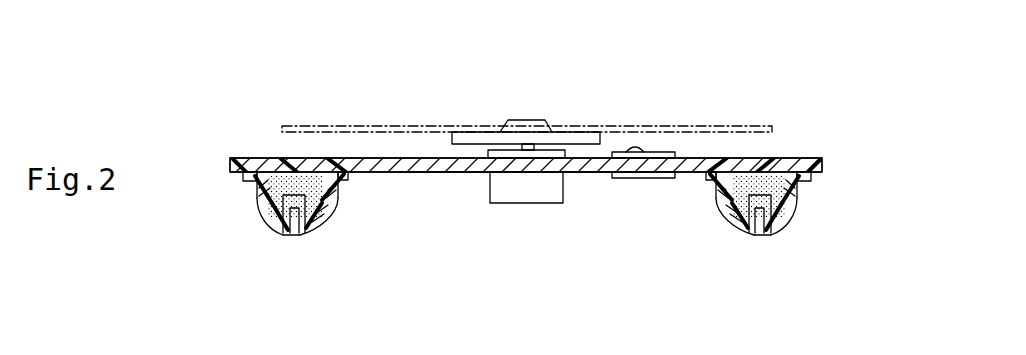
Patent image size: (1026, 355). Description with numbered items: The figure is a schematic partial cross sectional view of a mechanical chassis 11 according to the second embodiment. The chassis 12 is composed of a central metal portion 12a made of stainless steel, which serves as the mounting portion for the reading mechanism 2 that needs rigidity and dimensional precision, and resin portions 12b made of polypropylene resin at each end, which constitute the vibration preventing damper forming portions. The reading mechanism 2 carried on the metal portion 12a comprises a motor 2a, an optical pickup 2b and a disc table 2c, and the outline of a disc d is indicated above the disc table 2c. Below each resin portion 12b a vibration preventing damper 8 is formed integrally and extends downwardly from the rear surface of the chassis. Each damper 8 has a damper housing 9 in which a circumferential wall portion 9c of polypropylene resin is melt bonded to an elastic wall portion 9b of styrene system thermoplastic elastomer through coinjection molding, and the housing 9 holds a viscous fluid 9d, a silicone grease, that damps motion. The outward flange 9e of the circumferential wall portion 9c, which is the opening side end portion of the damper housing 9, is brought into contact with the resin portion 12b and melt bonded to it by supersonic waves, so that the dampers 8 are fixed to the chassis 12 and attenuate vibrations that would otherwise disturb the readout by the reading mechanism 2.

The reading mechanism 2 is at (563, 229).
The motor 2a is at (527, 203).
The optical pickup 2b is at (622, 178).
The disc table 2c is at (585, 144).
The vibration preventing damper 8 is at (281, 236).
The damper housing 9 is at (526, 229).
The elastic wall portion 9b is at (262, 232).
The circumferential wall portion 9c is at (262, 185).
The viscous fluid 9d is at (328, 213).
The outward flange 9e is at (343, 180).
The mechanical chassis 11 is at (792, 140).
The chassis 12 is at (262, 157).
The metal portion 12a is at (450, 172).
The resin portion 12b is at (233, 163).
The cover outline d is at (425, 126).